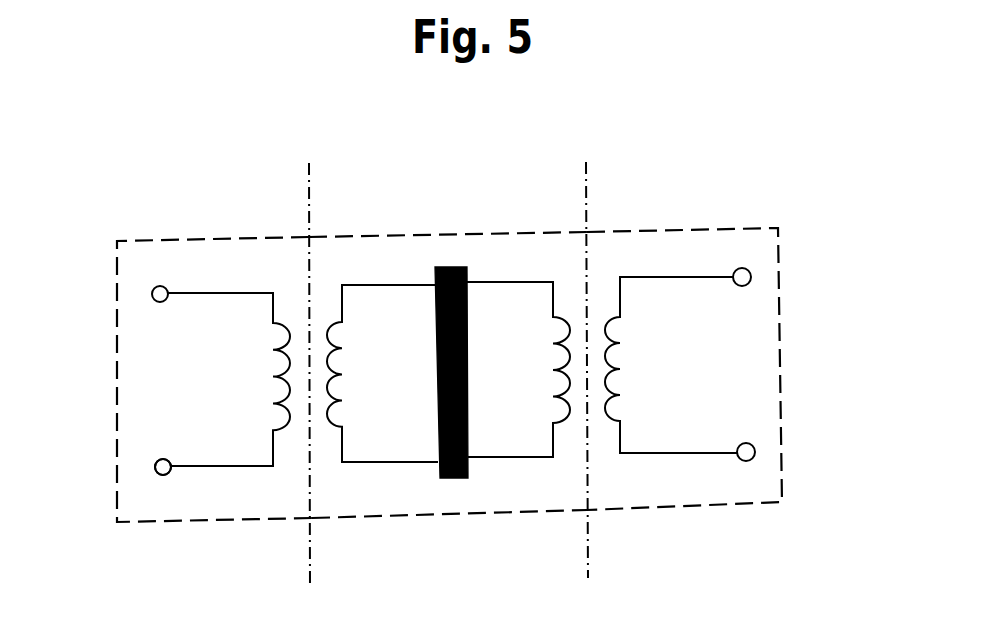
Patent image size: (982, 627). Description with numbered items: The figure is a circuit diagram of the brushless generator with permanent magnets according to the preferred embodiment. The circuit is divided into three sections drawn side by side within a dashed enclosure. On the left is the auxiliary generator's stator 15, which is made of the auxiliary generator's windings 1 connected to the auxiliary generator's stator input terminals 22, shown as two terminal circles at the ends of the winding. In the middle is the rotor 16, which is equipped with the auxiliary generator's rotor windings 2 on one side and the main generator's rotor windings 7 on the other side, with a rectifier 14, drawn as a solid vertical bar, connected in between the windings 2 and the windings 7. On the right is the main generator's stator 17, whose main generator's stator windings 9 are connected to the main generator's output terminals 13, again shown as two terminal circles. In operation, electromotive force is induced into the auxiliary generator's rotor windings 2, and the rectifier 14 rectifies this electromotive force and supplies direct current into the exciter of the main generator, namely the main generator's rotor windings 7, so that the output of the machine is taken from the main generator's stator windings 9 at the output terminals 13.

The auxiliary generator's windings 1 is at (255, 353).
The auxiliary generator's rotor windings 2 is at (382, 441).
The main generator's rotor windings 7 is at (518, 437).
The main generator's stator windings 9 is at (678, 429).
The main generator's output terminals 13 is at (767, 450).
The rectifier 14 is at (453, 267).
The auxiliary generator's stator 15 is at (216, 519).
The rotor 16 is at (457, 513).
The main generator's stator 17 is at (703, 505).
The auxiliary generator's stator input terminals 22 is at (98, 448).